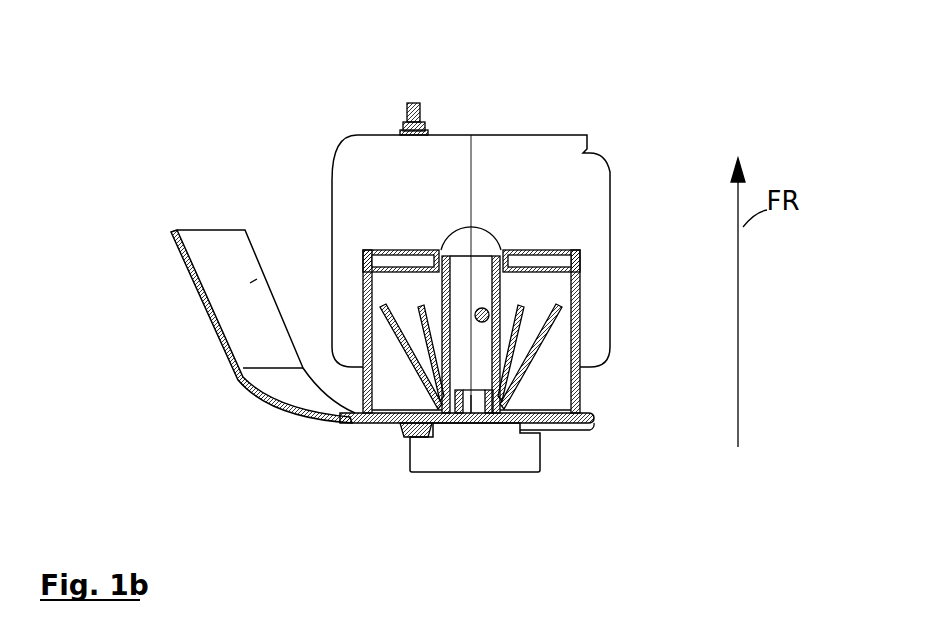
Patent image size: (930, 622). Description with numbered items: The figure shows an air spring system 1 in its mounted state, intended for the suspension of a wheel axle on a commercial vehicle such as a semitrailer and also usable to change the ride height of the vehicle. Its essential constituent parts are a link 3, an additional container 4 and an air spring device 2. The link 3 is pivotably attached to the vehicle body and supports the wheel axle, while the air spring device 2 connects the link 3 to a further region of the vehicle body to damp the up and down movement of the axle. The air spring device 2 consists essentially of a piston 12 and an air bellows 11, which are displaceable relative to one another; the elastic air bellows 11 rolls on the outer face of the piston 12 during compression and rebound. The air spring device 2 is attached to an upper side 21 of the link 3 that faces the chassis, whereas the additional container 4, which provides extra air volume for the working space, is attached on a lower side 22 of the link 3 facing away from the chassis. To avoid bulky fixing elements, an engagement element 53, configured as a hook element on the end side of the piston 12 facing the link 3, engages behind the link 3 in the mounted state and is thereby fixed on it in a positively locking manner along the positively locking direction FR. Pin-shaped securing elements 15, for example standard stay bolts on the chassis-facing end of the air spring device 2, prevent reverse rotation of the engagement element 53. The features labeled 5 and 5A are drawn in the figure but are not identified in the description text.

The air spring system 1 is at (631, 80).
The air spring device 2 is at (395, 205).
The link 3 is at (250, 283).
The additional container 4 is at (492, 455).
The fastener 5 is at (473, 412).
The bracket flange 5A is at (530, 440).
The air bellows 11 is at (610, 207).
The piston 12 is at (572, 305).
The pin-shaped securing elements 15 is at (418, 105).
The upper side 21 is at (207, 245).
The lower side 22 is at (337, 427).
The engagement element 53 is at (410, 433).